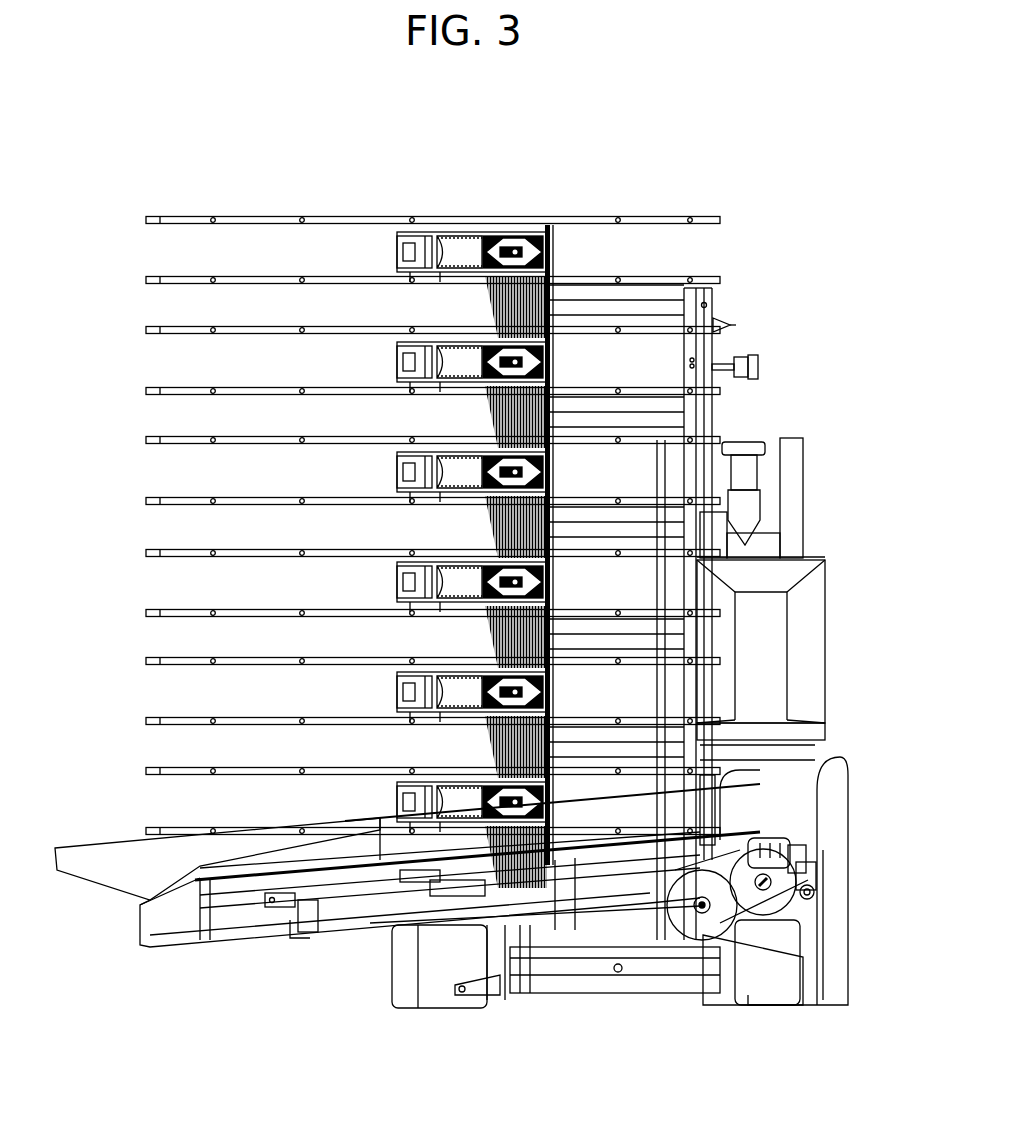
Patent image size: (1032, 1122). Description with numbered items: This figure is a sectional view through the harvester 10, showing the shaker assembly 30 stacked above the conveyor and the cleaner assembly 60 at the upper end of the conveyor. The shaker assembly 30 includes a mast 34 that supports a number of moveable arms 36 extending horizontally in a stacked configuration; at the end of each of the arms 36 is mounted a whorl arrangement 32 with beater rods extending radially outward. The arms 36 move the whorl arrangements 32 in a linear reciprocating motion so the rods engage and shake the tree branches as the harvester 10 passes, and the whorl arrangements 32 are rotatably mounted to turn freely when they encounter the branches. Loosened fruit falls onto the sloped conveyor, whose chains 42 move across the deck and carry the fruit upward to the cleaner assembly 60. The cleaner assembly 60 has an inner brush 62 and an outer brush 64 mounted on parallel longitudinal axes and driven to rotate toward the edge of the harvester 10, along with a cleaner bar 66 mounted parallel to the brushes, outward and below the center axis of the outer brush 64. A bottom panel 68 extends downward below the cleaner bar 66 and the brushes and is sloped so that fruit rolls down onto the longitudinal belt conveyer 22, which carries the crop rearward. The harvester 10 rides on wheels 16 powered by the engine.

The harvester 10 is at (700, 133).
The wheels 16 is at (407, 987).
The longitudinal belt conveyer 22 is at (587, 945).
The shaker assembly 30 is at (380, 137).
The whorl arrangements 32 is at (146, 281).
The mast 34 is at (549, 287).
The moveable arms 36 is at (455, 360).
The conveyer chains 42 is at (307, 866).
The cleaner assembly 60 is at (862, 748).
The inner brush 62 is at (696, 935).
The outer brush 64 is at (782, 862).
The cleaner bar 66 is at (810, 897).
The bottom panel 68 is at (815, 878).